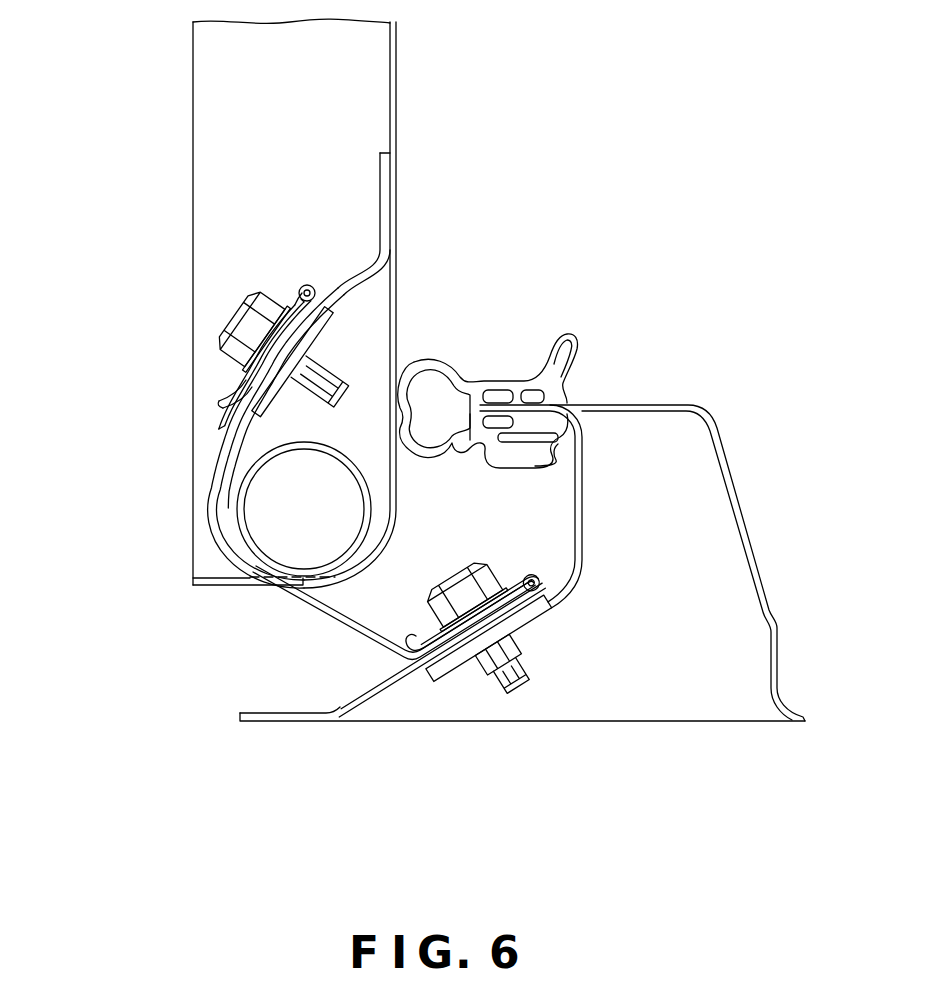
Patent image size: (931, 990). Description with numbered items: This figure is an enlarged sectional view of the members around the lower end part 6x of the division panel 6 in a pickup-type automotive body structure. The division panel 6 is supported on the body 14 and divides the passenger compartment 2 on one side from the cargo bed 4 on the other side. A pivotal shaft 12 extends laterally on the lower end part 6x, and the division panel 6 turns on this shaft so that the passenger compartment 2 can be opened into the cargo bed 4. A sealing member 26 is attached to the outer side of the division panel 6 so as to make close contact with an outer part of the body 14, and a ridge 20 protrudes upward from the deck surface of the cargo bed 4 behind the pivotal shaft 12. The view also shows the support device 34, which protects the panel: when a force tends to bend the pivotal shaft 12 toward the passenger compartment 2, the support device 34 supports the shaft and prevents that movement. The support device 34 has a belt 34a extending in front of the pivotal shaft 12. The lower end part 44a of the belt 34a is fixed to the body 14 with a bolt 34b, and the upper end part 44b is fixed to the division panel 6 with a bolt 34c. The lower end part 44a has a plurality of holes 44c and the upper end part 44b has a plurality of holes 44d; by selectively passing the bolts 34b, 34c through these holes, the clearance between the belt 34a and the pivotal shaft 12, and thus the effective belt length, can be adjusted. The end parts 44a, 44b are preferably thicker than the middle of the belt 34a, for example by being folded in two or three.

The passenger compartment 2 is at (86, 138).
The cargo bed 4 is at (672, 138).
The division panel 6 is at (397, 100).
The lower end part of the division panel 6x is at (398, 293).
The pivotal shaft 12 is at (232, 510).
The body 14 is at (427, 737).
The ridge 20 is at (705, 392).
The sealing member 26 is at (452, 372).
The support device 34 is at (345, 490).
The belt 34a is at (333, 617).
The bolt 34b is at (462, 572).
The bolt 34c is at (250, 300).
The lower end part of the belt 44a is at (550, 605).
The upper end part of the belt 44b is at (232, 378).
The holes 44c is at (522, 622).
The holes 44d is at (268, 343).